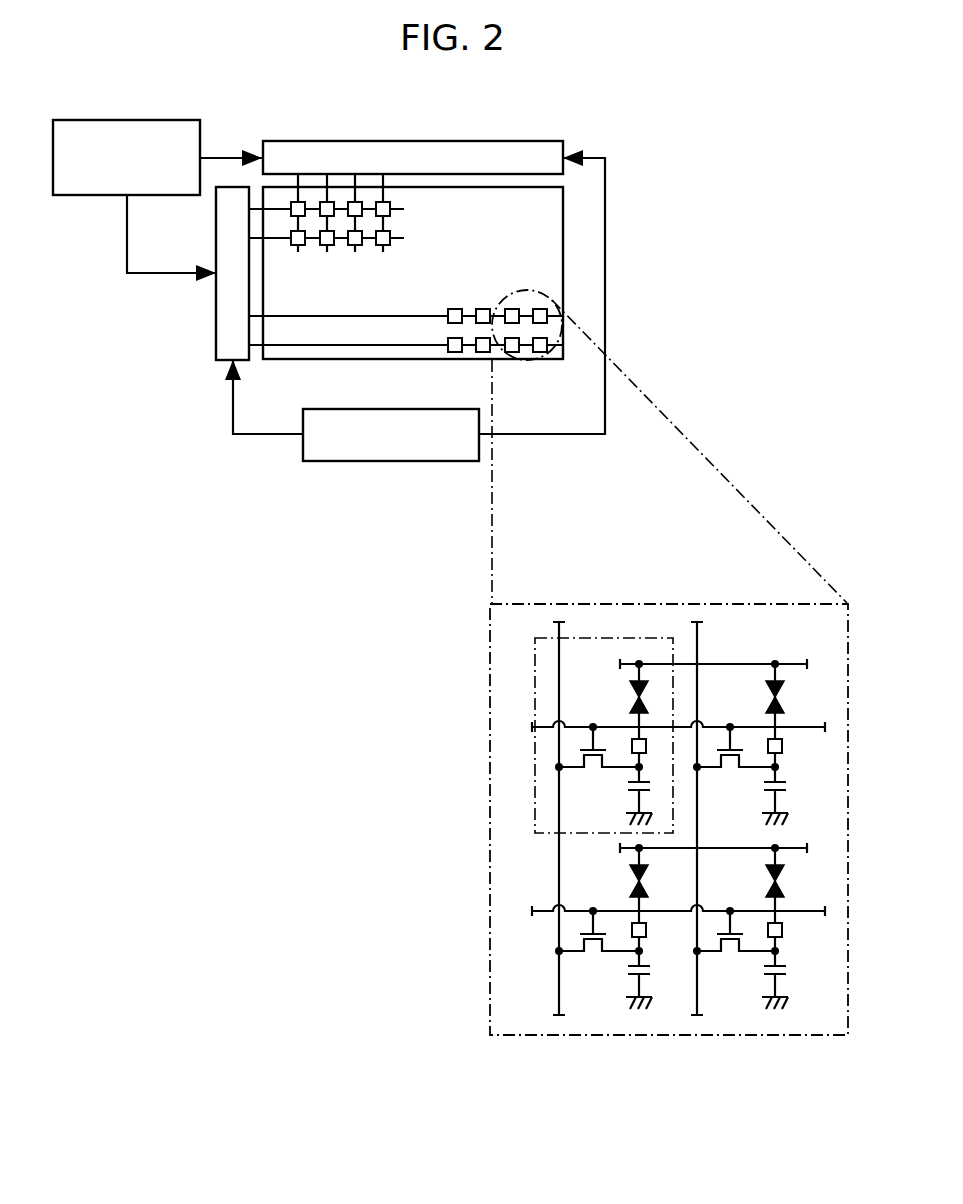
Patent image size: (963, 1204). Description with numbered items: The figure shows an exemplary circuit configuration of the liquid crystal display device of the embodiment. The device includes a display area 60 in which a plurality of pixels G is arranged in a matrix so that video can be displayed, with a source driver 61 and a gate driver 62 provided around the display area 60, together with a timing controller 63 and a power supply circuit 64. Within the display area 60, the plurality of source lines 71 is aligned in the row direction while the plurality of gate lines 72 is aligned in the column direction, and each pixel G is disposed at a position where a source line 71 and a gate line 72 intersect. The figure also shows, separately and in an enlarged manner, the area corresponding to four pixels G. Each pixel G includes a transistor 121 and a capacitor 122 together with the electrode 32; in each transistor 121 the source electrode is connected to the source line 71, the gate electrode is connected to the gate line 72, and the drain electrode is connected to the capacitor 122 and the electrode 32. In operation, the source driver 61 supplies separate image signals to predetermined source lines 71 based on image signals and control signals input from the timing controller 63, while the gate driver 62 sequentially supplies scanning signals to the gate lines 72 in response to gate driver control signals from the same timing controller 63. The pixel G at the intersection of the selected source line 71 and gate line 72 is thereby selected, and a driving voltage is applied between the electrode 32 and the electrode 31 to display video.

The display area 60 is at (290, 360).
The source driver 61 is at (485, 141).
The gate driver 62 is at (216, 362).
The timing controller 63 is at (165, 120).
The power supply circuit 64 is at (428, 461).
The pixel G is at (455, 352).
The source line 71 is at (558, 663).
The gate line 72 is at (543, 729).
The electrode 31 is at (768, 697).
The electrode 32 is at (632, 744).
The transistor 121 is at (652, 786).
The capacitor 122 is at (593, 770).